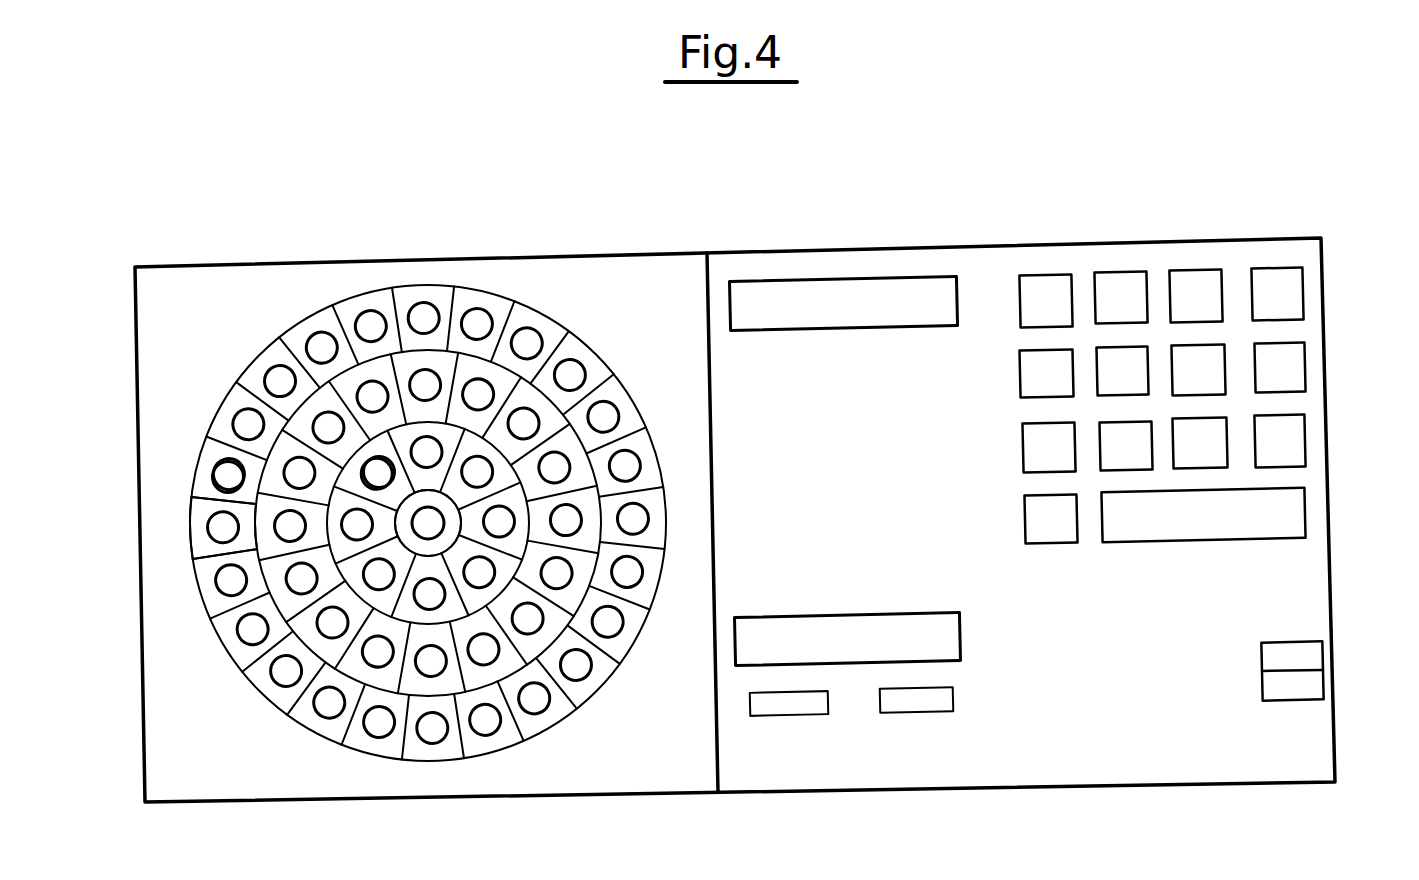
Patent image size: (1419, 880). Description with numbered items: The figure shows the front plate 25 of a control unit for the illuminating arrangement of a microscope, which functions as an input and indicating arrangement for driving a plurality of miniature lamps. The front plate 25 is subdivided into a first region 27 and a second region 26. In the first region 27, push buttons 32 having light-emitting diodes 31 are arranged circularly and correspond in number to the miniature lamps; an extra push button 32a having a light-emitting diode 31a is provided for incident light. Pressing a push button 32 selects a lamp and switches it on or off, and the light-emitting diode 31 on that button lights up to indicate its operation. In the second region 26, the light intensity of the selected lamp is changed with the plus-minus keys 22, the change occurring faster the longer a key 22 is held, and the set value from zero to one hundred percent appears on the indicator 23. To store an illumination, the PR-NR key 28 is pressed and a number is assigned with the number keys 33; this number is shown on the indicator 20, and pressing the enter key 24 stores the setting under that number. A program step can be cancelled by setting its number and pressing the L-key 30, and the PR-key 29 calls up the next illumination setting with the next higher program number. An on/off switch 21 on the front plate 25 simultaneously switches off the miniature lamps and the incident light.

The indicator 20 is at (863, 292).
The on/off switch 21 is at (1297, 700).
The plus-minus keys 22 is at (816, 707).
The indicator 23 is at (957, 634).
The enter key 24 is at (1299, 522).
The front plate 25 is at (772, 204).
The second region 26 is at (1000, 262).
The first region 27 is at (353, 278).
The PR-NR key 28 is at (1303, 291).
The PR-key 29 is at (1305, 362).
The L-key 30 is at (1305, 432).
The light-emitting diode 31 is at (207, 474).
The light-emitting diode 31a is at (428, 528).
The push buttons 32 is at (197, 533).
The extra push button 32a is at (410, 510).
The number keys 33 is at (1193, 280).